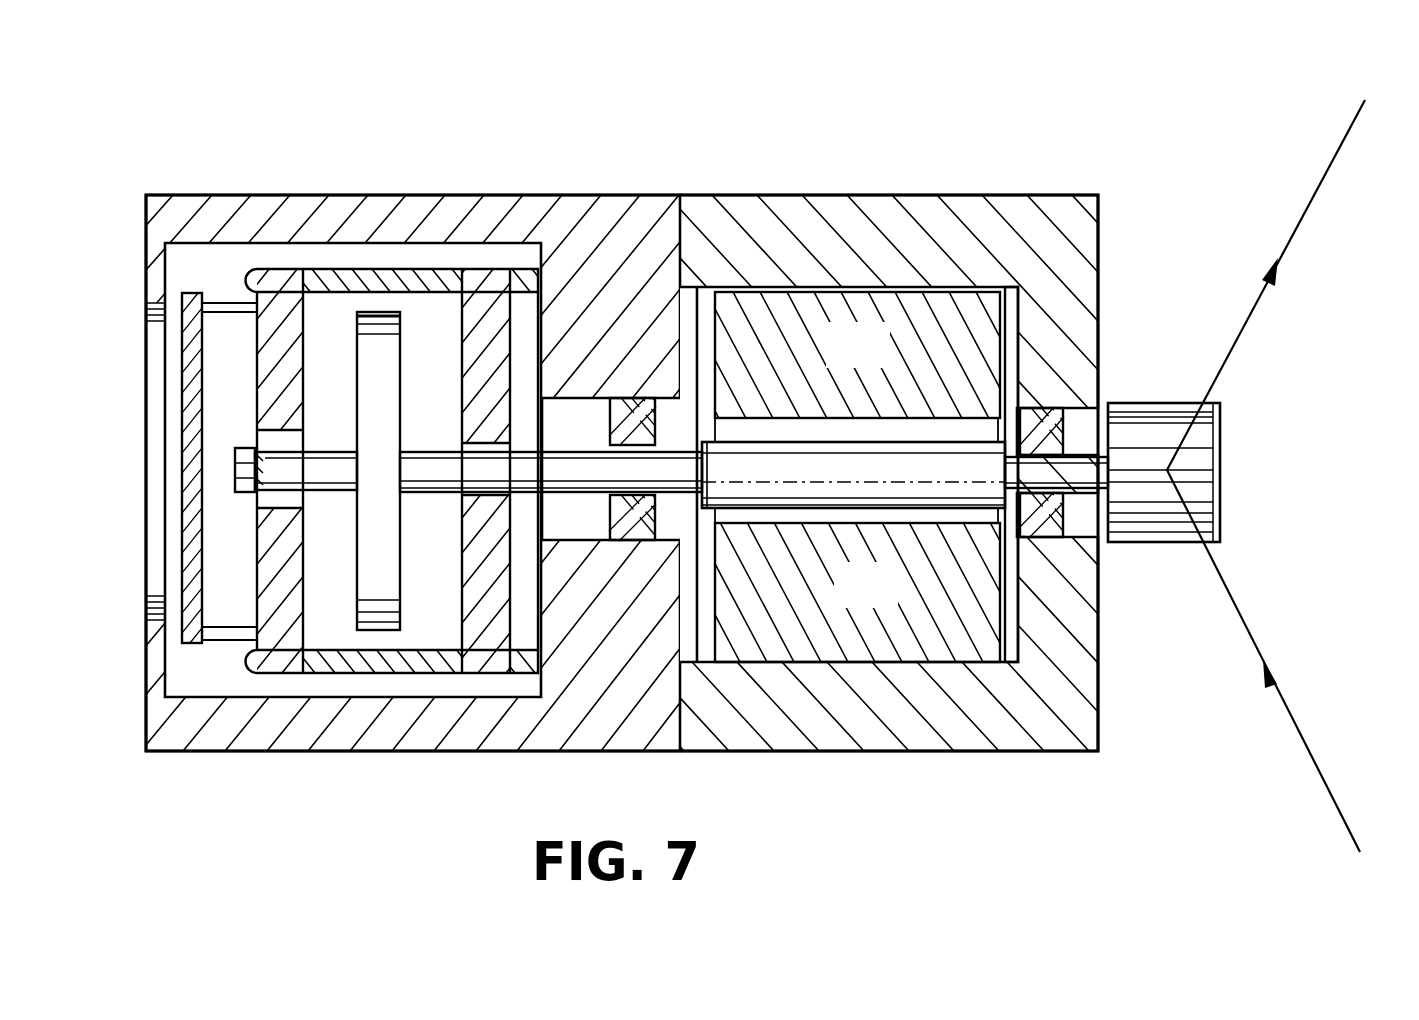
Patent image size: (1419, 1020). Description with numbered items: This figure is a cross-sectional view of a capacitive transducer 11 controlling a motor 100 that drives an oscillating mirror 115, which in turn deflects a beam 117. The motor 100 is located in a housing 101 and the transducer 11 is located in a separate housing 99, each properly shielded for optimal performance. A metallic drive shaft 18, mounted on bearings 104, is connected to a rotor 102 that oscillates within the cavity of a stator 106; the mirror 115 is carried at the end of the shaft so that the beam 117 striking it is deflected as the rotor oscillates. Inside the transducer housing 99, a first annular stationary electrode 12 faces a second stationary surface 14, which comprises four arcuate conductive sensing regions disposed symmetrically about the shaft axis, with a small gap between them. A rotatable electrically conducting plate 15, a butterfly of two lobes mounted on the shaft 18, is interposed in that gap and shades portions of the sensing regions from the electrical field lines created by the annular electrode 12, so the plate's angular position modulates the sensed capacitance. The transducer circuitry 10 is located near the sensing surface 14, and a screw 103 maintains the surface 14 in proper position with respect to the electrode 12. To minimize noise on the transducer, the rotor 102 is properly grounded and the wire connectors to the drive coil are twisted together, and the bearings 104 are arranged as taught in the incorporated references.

The capacitive transducer 11 is at (323, 157).
The housing 99 is at (493, 197).
The motor 100 is at (797, 117).
The housing 101 is at (900, 197).
The second stationary surface 14 is at (183, 362).
The transducer circuitry 10 is at (180, 425).
The screw 103 is at (253, 655).
The first annular stationary electrode 12 is at (487, 652).
The rotatable electrically conducting plate 15 is at (400, 367).
The drive shaft 18 is at (450, 495).
The rotor 102 is at (848, 491).
The stator 106 is at (883, 362).
The bearings 104 is at (1098, 398).
The oscillating mirror 115 is at (1228, 420).
The beam 117 is at (1303, 733).